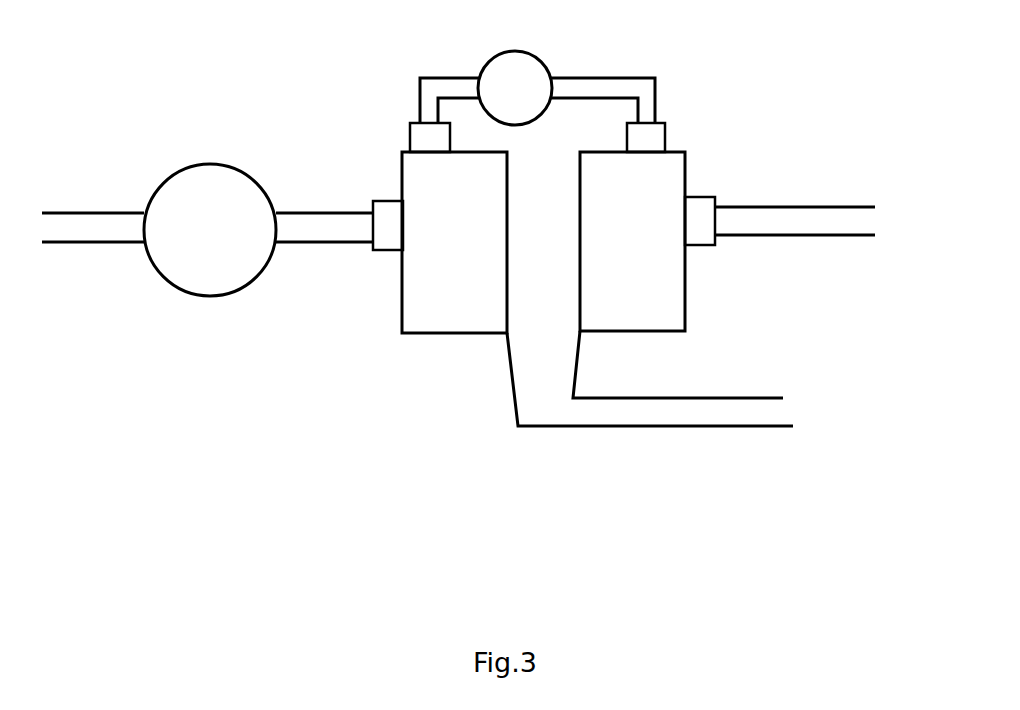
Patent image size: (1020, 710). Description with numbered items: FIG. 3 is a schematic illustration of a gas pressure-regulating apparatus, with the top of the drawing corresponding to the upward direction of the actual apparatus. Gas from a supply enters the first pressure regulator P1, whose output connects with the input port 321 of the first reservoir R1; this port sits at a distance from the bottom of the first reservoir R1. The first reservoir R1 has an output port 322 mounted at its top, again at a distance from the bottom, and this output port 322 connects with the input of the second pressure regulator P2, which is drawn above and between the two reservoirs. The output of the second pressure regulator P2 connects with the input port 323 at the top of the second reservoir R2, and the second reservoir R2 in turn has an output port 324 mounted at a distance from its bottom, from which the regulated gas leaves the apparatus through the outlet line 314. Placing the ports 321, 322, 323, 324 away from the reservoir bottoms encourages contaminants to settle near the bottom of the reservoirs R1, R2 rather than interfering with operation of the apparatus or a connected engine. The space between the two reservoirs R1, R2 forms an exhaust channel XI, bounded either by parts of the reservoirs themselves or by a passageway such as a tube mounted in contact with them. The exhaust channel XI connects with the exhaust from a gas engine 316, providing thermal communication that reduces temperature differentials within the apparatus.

The first pressure regulator P1 is at (196, 216).
The second pressure regulator P2 is at (501, 94).
The first reservoir R1 is at (441, 185).
The second reservoir R2 is at (618, 185).
The input port of the first reservoir 321 is at (376, 231).
The output port of the first reservoir 322 is at (415, 145).
The input port of the second reservoir 323 is at (633, 145).
The output port of the second reservoir 324 is at (688, 218).
The product outlet line 314 is at (772, 228).
The exhaust from a gas engine 316 is at (670, 418).
The exhaust channel XI is at (344, 469).